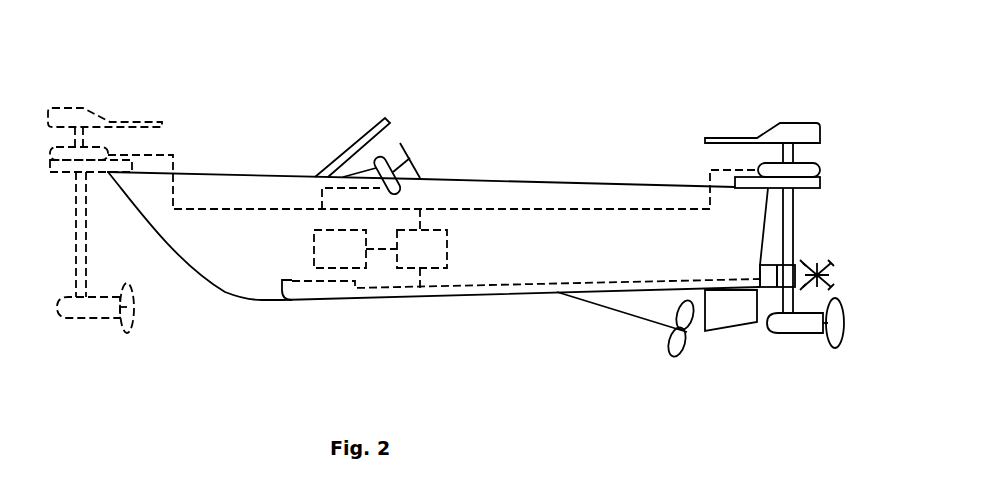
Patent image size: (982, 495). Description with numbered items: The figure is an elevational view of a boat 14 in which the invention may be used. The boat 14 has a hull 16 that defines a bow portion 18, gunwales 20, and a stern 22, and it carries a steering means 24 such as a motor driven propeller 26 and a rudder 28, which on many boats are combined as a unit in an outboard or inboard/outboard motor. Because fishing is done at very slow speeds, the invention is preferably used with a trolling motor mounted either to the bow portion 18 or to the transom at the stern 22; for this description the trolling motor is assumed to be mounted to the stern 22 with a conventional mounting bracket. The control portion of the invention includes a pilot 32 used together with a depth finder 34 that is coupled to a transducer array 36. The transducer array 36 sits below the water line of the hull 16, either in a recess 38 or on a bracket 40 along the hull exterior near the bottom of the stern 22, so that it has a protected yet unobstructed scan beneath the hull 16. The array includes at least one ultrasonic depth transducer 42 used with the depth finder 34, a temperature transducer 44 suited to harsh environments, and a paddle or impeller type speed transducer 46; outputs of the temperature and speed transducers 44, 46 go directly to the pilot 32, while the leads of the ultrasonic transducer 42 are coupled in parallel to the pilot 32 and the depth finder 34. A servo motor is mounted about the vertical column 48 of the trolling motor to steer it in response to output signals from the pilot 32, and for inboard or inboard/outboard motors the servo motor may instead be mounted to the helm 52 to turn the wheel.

The boat 14 is at (433, 194).
The hull 16 is at (222, 293).
The bow portion 18 is at (263, 213).
The gunwales 20 is at (568, 182).
The stern 22 is at (511, 264).
The steering means 24 is at (755, 282).
The propeller 26 is at (680, 291).
The rudder 28 is at (731, 310).
The pilot 32 is at (406, 248).
The depth finder 34 is at (340, 249).
The transducer array 36 is at (293, 276).
The recess 38 is at (290, 302).
The bracket 40 is at (800, 266).
The ultrasonic depth transducer 42 is at (763, 290).
The temperature transducer 44 is at (782, 292).
The speed transducer 46 is at (818, 297).
The vertical column 48 is at (794, 220).
The helm 52 is at (428, 157).